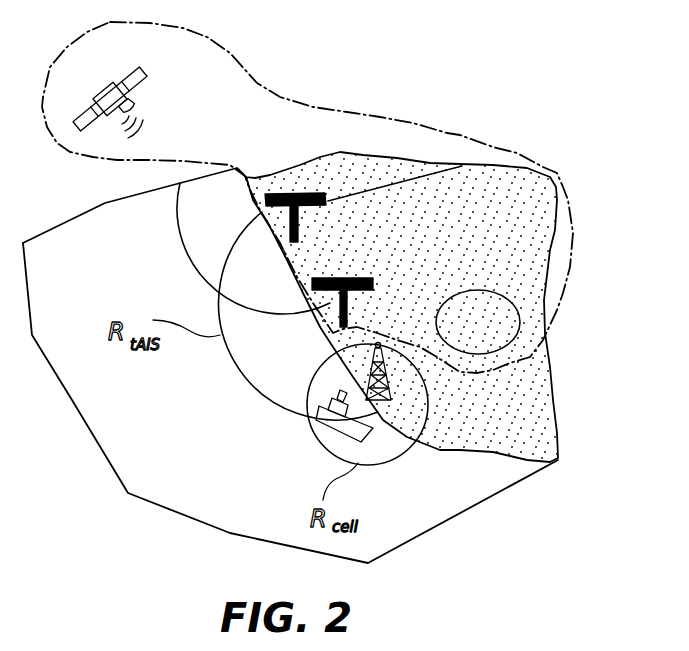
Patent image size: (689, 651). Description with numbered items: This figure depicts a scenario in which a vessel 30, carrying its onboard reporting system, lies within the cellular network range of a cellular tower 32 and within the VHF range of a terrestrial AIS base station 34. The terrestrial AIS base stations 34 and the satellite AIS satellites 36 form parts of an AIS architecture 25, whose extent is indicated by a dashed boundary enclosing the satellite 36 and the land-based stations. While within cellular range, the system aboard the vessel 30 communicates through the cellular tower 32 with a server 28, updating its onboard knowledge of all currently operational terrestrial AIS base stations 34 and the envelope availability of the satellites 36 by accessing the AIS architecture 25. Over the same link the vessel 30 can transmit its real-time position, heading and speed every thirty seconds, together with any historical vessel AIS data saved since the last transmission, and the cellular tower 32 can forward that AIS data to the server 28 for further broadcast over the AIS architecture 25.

The AIS architecture 25 is at (457, 130).
The server 28 is at (490, 340).
The vessel 30 is at (326, 428).
The cellular tower 32 is at (370, 385).
The terrestrial AIS base station 34 is at (301, 196).
The satellite AIS satellite 36 is at (132, 78).